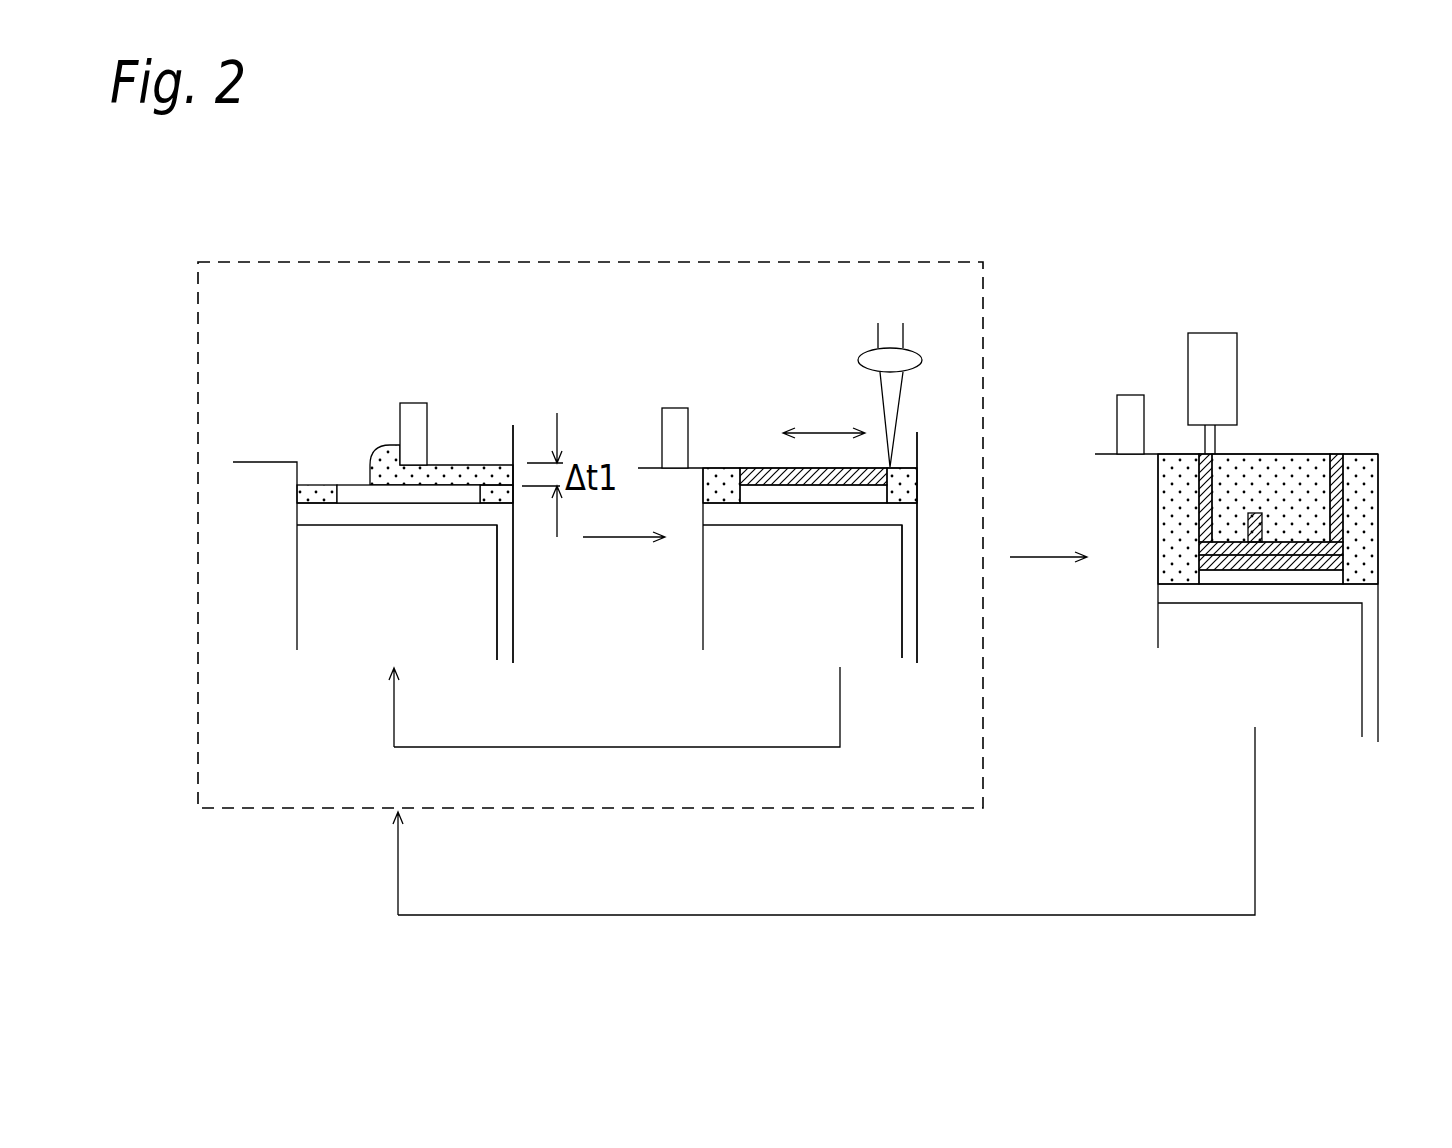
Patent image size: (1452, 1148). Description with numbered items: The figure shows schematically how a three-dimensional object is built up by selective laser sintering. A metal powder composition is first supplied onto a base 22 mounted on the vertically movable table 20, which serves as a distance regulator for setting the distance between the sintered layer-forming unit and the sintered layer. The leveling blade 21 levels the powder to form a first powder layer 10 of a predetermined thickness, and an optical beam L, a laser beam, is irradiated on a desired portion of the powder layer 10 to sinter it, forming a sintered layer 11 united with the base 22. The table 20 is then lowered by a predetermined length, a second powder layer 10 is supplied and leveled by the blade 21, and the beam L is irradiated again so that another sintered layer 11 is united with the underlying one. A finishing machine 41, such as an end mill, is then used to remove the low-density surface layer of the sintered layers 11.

The powder layer 10 is at (470, 477).
The sintered layer 11 is at (765, 468).
The vertically movable table 20 is at (515, 628).
The leveling blade 21 is at (418, 418).
The base 22 is at (355, 490).
The finishing machine 41 is at (1222, 360).
The optical beam L is at (877, 343).